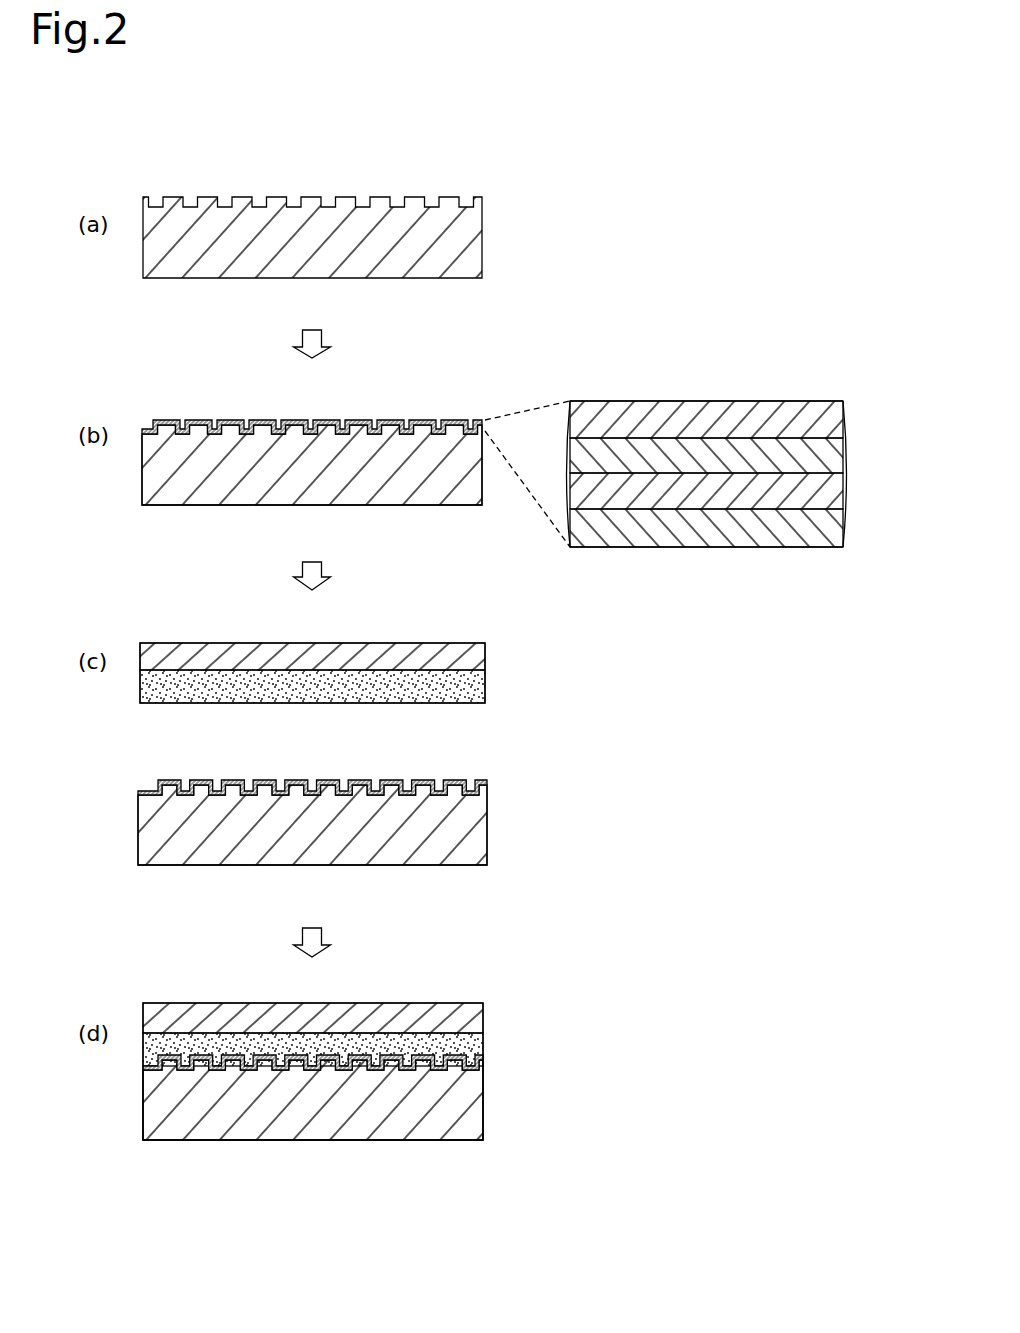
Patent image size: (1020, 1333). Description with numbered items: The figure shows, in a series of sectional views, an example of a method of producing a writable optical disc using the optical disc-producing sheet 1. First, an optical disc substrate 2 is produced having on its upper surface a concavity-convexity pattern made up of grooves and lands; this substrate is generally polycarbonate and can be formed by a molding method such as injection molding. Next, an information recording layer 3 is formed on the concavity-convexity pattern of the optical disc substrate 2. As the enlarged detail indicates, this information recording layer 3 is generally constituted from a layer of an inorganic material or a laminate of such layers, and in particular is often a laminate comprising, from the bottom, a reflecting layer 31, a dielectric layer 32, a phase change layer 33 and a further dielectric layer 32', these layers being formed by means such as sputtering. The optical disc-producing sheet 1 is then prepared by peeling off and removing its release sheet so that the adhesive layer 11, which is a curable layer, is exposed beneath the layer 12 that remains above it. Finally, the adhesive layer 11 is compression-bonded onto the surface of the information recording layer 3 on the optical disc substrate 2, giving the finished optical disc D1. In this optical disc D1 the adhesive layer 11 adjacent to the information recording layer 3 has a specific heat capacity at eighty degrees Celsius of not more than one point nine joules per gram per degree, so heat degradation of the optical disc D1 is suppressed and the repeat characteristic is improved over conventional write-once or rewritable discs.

The optical disc-producing sheet 1 is at (191, 636).
The optical disc substrate 2 is at (472, 255).
The information recording layer 3 is at (445, 421).
The adhesive layer 11 is at (482, 691).
The support layer 12 is at (455, 643).
The reflecting layer 31 is at (845, 541).
The dielectric layer 32 is at (744, 493).
The dielectric layer 32' is at (745, 418).
The phase change layer 33 is at (845, 457).
The optical disc D1 is at (192, 1162).